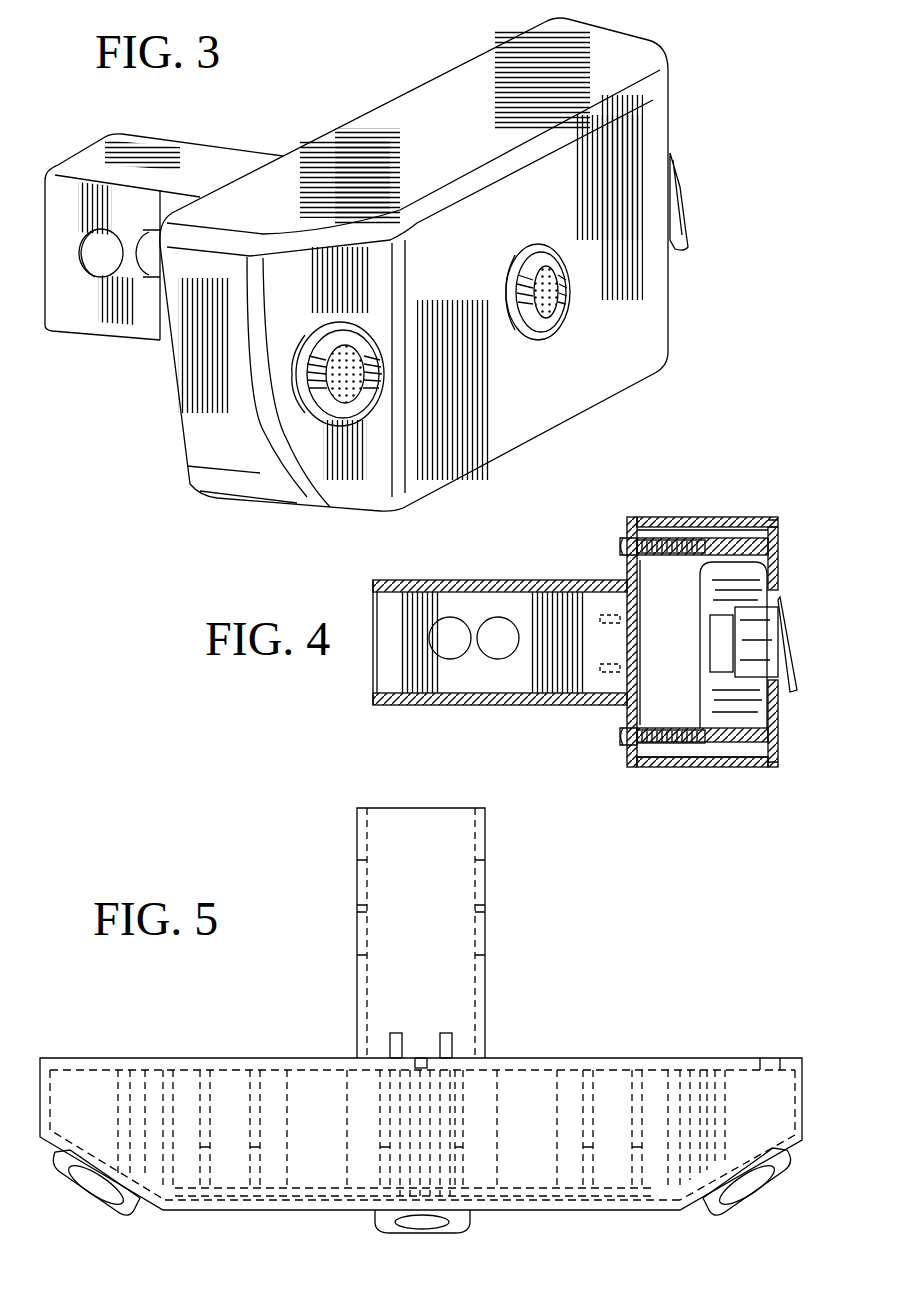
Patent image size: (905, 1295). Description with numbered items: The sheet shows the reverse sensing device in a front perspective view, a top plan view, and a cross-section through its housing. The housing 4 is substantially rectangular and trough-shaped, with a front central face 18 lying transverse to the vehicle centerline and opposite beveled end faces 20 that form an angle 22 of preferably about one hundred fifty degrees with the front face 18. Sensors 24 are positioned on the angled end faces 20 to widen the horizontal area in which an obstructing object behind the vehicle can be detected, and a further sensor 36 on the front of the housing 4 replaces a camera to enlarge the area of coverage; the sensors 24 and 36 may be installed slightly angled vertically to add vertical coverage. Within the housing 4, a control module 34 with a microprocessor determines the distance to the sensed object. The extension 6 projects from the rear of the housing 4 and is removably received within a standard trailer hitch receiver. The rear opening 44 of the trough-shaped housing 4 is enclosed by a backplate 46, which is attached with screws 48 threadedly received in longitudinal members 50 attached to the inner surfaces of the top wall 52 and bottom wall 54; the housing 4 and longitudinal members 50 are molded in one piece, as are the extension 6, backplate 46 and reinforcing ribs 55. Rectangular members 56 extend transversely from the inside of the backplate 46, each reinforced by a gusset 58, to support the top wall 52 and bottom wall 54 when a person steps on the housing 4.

In FIG. 3, the housing 4 is at (633, 15).
In FIG. 5, the housing 4 is at (88, 1050).
In FIG. 3, the extension 6 is at (90, 332).
In FIG. 5, the extension 6 is at (492, 966).
In FIG. 3, the front central face 18 is at (608, 377).
In FIG. 3, the angled end faces 20 is at (313, 467).
In FIG. 3, the angle 22 is at (420, 189).
In FIG. 3, the sensors 24 is at (363, 347).
In FIG. 4, the control module 34 is at (778, 567).
In FIG. 3, the sensor 36 is at (546, 246).
In FIG. 4, the sensor 36 is at (800, 657).
In FIG. 4, the opening 44 is at (653, 516).
In FIG. 5, the opening 44 is at (792, 1093).
In FIG. 4, the backplate 46 is at (622, 705).
In FIG. 4, the screws 48 is at (705, 515).
In FIG. 4, the longitudinal members 50 is at (775, 520).
In FIG. 4, the top wall 52 is at (680, 515).
In FIG. 4, the bottom wall 54 is at (678, 768).
In FIG. 4, the reinforcing ribs 55 is at (617, 575).
In FIG. 4, the members 56 is at (745, 515).
In FIG. 4, the gusset 58 is at (635, 562).